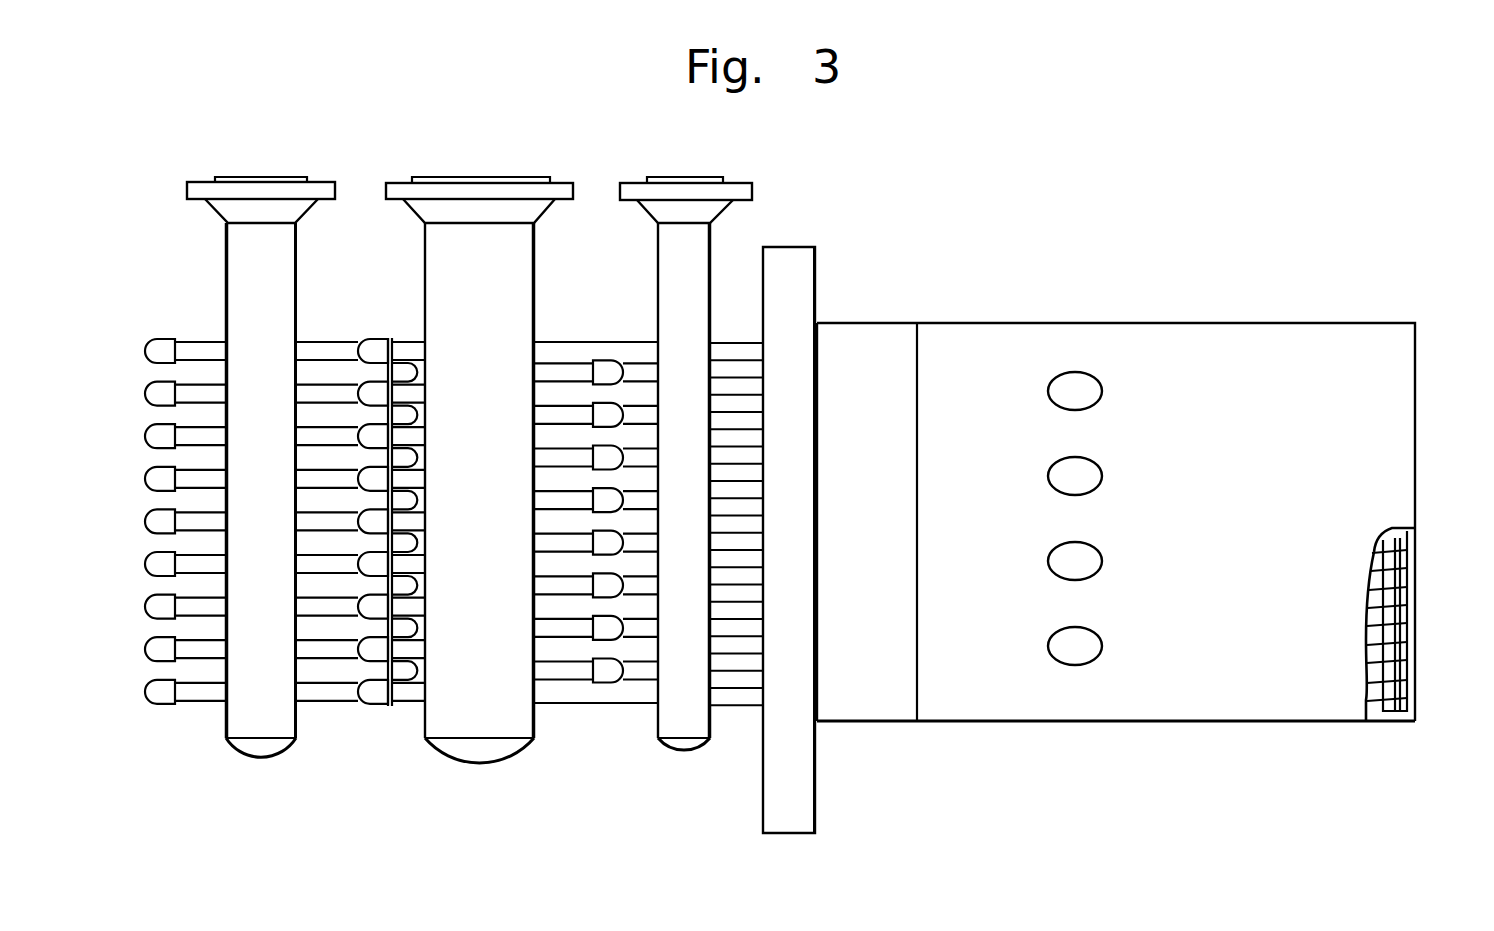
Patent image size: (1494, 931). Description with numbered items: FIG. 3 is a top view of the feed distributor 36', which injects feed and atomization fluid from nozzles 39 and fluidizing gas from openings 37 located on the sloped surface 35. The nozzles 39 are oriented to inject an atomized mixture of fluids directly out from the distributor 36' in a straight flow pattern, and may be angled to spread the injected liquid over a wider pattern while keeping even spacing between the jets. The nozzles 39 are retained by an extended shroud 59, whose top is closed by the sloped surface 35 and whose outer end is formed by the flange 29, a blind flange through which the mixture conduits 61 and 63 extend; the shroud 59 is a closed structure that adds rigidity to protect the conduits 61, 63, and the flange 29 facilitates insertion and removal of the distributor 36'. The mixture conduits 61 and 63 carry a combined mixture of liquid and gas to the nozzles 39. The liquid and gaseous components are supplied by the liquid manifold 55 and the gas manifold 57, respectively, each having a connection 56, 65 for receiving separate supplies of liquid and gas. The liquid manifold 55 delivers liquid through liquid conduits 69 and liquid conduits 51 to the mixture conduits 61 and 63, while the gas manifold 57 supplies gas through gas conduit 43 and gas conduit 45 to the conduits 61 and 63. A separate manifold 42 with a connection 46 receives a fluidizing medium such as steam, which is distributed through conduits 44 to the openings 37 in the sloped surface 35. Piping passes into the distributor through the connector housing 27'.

The connector housing 27' is at (1155, 522).
The flange 29 is at (802, 840).
The sloped surface 35 is at (1237, 561).
The feed distributor 36' is at (519, 508).
The openings 37 is at (1050, 470).
The nozzles 39 is at (1389, 715).
The manifold 42 is at (712, 256).
The gas conduit 43 is at (193, 350).
The conduits 44 is at (752, 485).
The gas conduit 45 is at (330, 366).
The connection 46 is at (755, 190).
The liquid conduits 51 is at (560, 373).
The liquid manifold 55 is at (534, 296).
The connection 56 is at (574, 196).
The gas manifold 57 is at (297, 267).
The extended shroud 59 is at (1060, 724).
The mixture conduit 61 is at (738, 352).
The mixture conduit 63 is at (630, 677).
The connection 65 is at (337, 192).
The liquid conduits 69 is at (404, 352).